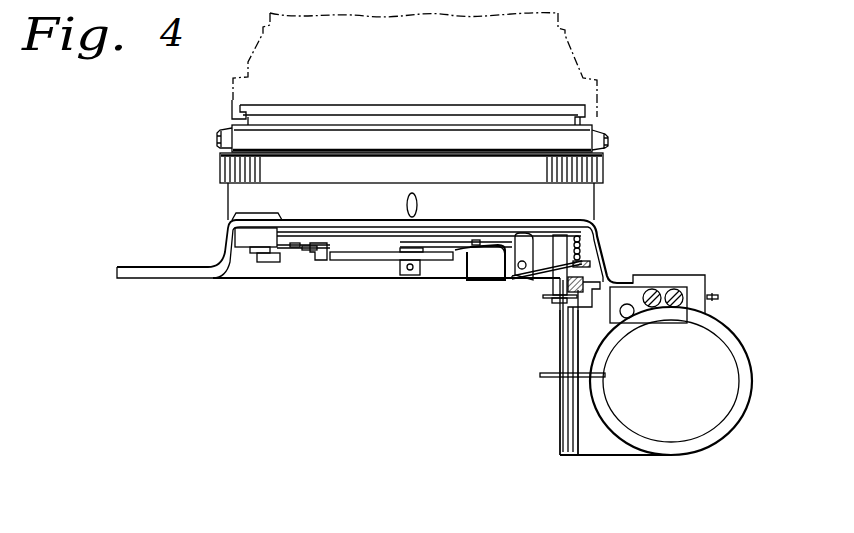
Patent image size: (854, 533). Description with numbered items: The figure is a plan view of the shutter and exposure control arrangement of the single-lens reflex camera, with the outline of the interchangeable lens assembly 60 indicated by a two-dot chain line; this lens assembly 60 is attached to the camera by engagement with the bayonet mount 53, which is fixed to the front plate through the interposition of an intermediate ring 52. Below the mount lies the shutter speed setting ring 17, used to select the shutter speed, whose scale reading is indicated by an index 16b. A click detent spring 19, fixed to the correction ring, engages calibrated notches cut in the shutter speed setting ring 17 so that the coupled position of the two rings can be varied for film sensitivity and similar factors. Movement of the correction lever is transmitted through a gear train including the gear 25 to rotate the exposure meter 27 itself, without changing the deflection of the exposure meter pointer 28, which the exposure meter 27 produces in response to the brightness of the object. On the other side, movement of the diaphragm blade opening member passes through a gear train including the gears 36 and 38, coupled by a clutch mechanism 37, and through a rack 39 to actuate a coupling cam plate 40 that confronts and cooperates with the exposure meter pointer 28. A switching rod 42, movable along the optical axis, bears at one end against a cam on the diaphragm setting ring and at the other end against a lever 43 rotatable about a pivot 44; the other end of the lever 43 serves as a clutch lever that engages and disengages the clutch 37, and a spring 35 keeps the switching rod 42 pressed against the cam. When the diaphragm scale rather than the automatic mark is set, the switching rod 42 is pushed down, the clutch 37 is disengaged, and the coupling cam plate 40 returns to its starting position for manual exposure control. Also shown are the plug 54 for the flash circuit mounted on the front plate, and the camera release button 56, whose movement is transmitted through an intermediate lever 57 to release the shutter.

The interchangeable lens assembly 60 is at (250, 57).
The bayonet mount 53 is at (238, 108).
The click detent spring 19 is at (601, 128).
The shutter speed setting ring 17 is at (603, 165).
The intermediate ring 52 is at (228, 197).
The index 16b is at (405, 207).
The plug 54 is at (243, 242).
The intermediate lever 57 is at (320, 262).
The switching rod 42 is at (473, 240).
The lever 43 is at (517, 278).
The pivot 44 is at (522, 270).
The gear 38 is at (560, 303).
The spring 35 is at (580, 236).
The gear 36 is at (588, 262).
The clutch mechanism 37 is at (584, 280).
The rack 39 is at (630, 283).
The camera release button 56 is at (631, 317).
The gear 25 is at (714, 293).
The exposure meter 27 is at (671, 381).
The exposure meter pointer 28 is at (543, 378).
The coupling cam plate 40 is at (560, 430).